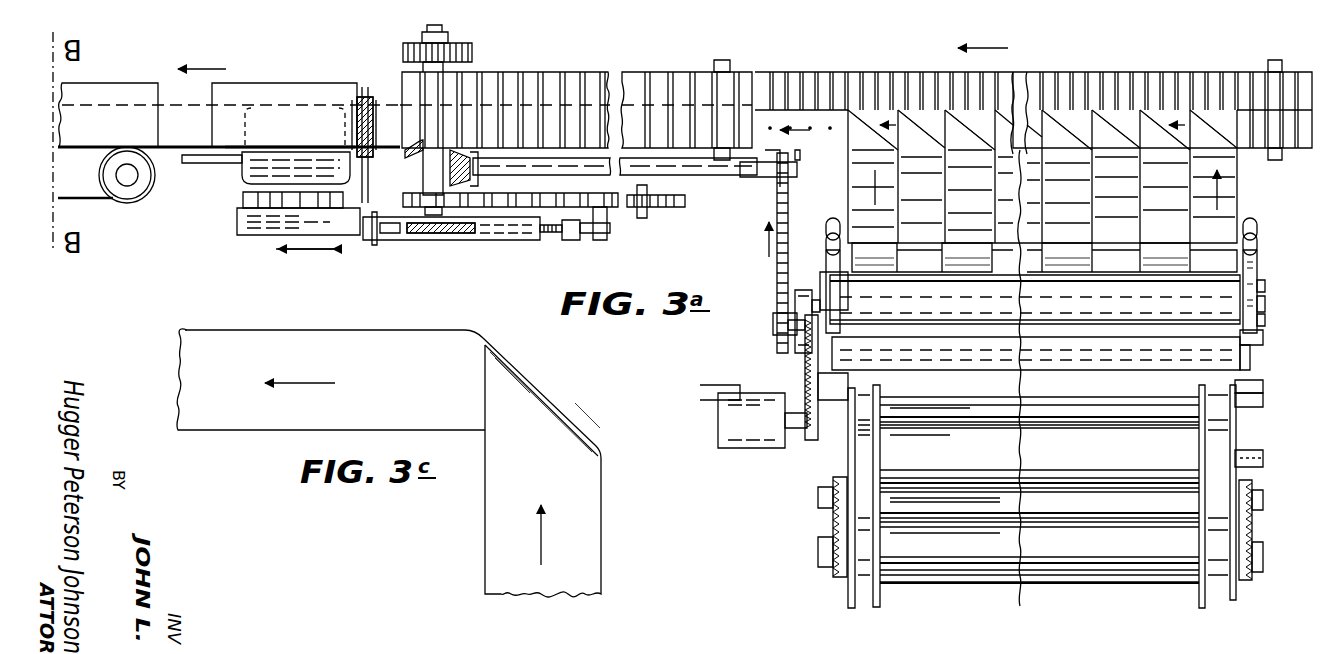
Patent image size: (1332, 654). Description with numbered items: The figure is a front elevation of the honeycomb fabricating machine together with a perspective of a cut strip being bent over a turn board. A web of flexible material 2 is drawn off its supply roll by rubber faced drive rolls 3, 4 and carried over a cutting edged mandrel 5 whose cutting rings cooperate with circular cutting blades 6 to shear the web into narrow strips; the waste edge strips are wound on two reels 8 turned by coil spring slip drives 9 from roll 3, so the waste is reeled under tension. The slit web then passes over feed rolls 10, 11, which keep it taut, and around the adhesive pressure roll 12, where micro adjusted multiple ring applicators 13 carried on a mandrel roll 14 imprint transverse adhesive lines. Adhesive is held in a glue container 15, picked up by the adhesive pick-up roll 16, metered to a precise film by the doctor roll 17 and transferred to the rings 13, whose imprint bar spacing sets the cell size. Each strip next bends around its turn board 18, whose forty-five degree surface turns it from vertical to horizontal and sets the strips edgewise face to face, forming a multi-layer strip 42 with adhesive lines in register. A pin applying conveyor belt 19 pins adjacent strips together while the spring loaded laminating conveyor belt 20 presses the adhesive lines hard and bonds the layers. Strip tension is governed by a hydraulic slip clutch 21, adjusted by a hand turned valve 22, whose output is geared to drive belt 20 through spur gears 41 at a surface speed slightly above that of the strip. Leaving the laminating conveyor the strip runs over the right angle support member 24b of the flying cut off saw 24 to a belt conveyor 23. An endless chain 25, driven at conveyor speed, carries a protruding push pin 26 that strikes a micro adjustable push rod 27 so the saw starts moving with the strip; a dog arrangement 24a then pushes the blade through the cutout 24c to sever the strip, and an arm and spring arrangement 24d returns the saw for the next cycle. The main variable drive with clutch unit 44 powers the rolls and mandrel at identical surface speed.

In FIG. 3C, the web of flexible material 2 is at (590, 546).
In FIG. 3A, the rubber faced drive roll 3 is at (1264, 556).
In FIG. 3A, the rubber faced drive roll 4 is at (1264, 454).
In FIG. 3A, the cutting edged mandrel 5 is at (1264, 464).
In FIG. 3A, the circular cutting blades 6 is at (1264, 400).
In FIG. 3A, the reels 8 is at (846, 598).
In FIG. 3A, the coil spring slip drives 9 is at (833, 525).
In FIG. 3A, the feed roll 10 is at (1264, 388).
In FIG. 3A, the feed roll 11 is at (1266, 322).
In FIG. 3A, the adhesive pressure roll 12 is at (1266, 285).
In FIG. 3A, the multiple ring applicators 13 is at (1215, 260).
In FIG. 3A, the mandrel roll 14 is at (1258, 270).
In FIG. 3A, the glue container 15 is at (1251, 360).
In FIG. 3A, the adhesive pick-up roll 16 is at (1264, 338).
In FIG. 3A, the doctor roll 17 is at (1266, 304).
In FIG. 3A, the turn board 18 is at (1230, 198).
In FIG. 3A, the pin applying conveyor belt 19 is at (1175, 80).
In FIG. 3A, the laminating conveyor belt 20 is at (667, 77).
In FIG. 3A, the hydraulic slip clutch 21 is at (797, 352).
In FIG. 3A, the hand turned valve 22 is at (803, 288).
In FIG. 3A, the belt conveyor 23 is at (95, 200).
In FIG. 3A, the flying cut off saw 24 is at (240, 170).
In FIG. 3A, the dog arrangement 24a is at (210, 163).
In FIG. 3A, the right angle support member 24b is at (290, 61).
In FIG. 3A, the cutout 24c is at (355, 95).
In FIG. 3A, the arm and spring arrangement 24d is at (448, 240).
In FIG. 3A, the endless chain 25 is at (672, 208).
In FIG. 3A, the push pin 26 is at (602, 240).
In FIG. 3A, the push rod 27 is at (552, 234).
In FIG. 3A, the spur gears 41 is at (468, 43).
In FIG. 3A, the multi-layer strip 42 is at (815, 140).
In FIG. 3A, the main variable drive with clutch unit 44 is at (745, 448).